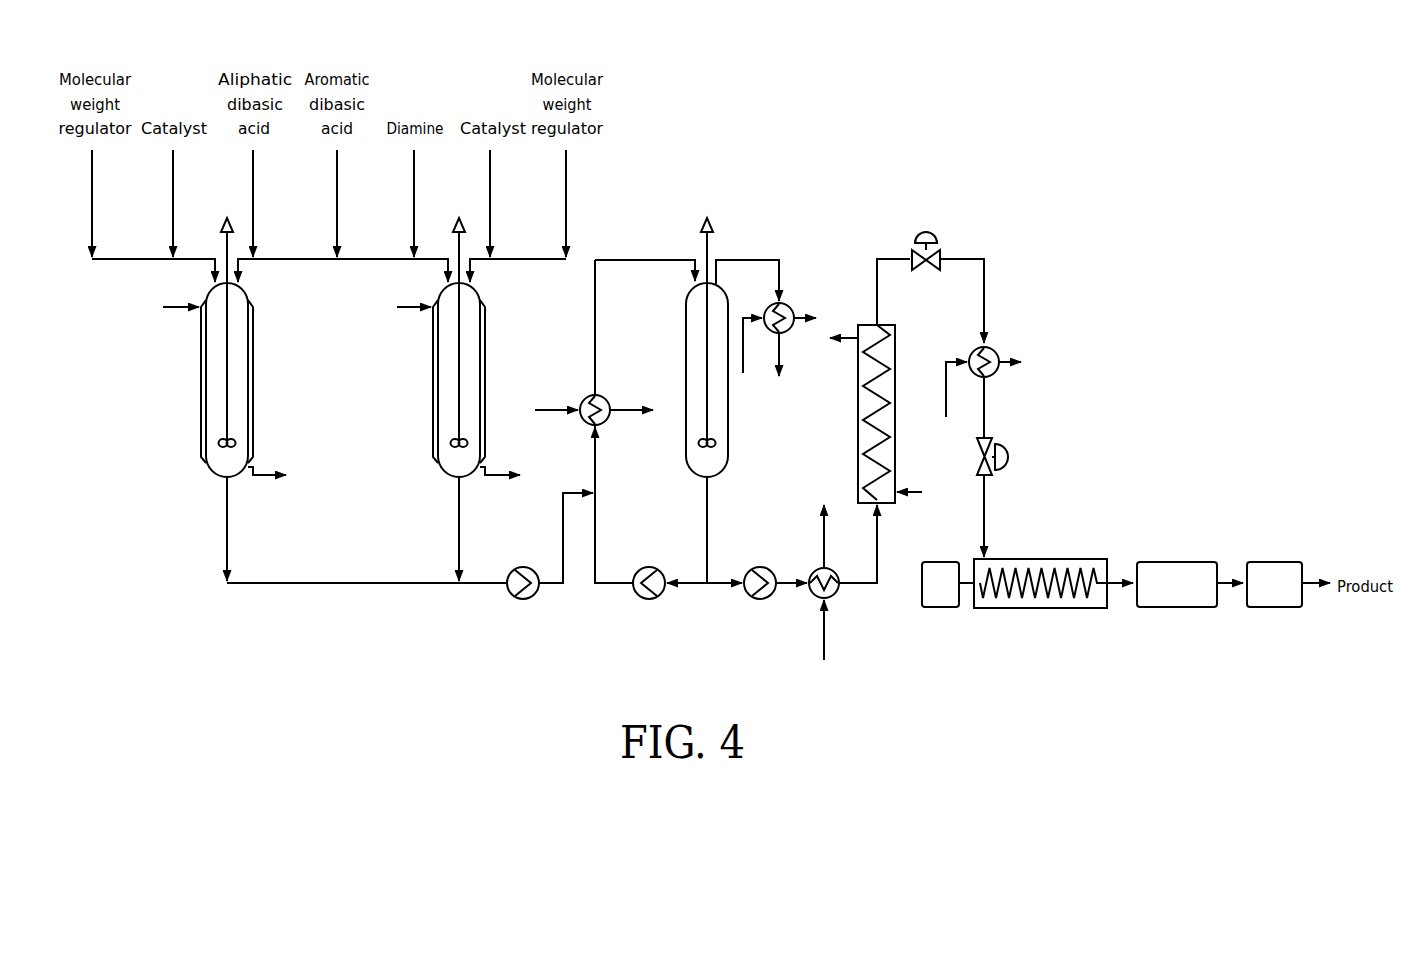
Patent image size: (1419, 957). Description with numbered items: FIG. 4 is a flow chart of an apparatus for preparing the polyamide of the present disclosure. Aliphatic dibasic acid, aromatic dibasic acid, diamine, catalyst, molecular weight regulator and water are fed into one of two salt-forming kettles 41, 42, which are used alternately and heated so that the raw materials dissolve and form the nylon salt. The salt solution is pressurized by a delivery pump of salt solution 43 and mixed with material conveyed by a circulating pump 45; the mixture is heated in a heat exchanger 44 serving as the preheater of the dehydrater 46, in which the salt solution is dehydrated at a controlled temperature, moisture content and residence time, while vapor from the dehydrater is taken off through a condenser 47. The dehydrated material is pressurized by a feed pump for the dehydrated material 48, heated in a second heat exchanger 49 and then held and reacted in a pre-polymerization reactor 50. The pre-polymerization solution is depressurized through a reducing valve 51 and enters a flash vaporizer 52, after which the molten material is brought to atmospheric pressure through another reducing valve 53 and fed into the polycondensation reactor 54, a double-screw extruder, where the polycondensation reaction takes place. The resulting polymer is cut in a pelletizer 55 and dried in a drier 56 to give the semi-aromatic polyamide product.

The salt-forming kettle 41 is at (224, 399).
The salt-forming kettle 42 is at (456, 399).
The delivery pump of salt solution 43 is at (550, 575).
The heat exchanger 44 is at (615, 376).
The circulating pump 45 is at (651, 541).
The dehydrater 46 is at (711, 400).
The condenser 47 is at (782, 315).
The feed pump for the dehydrated material 48 is at (757, 612).
The heat exchanger 49 is at (843, 582).
The pre-polymerization reactor 50 is at (870, 381).
The reducing valve 51 is at (947, 266).
The flash vaporizer 52 is at (989, 375).
The reducing valve 53 is at (1010, 497).
The polycondensation reactor (double-screw extruder) 54 is at (1027, 608).
The pelletizer 55 is at (1190, 609).
The drier 56 is at (1288, 609).